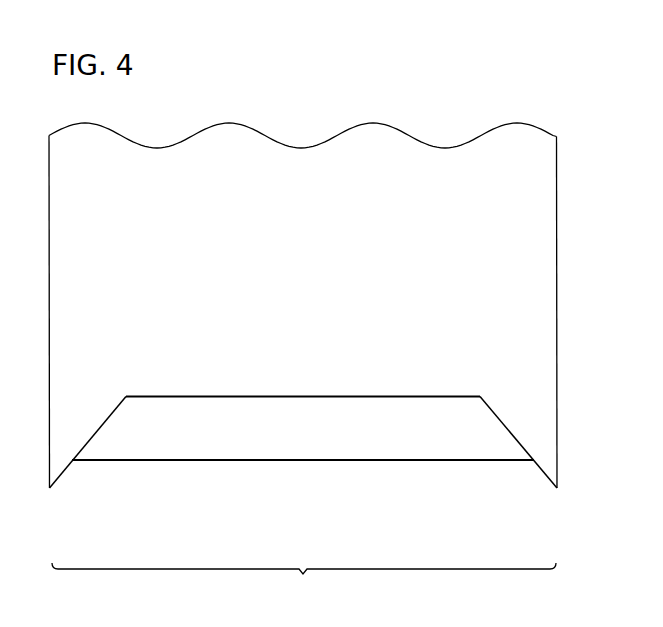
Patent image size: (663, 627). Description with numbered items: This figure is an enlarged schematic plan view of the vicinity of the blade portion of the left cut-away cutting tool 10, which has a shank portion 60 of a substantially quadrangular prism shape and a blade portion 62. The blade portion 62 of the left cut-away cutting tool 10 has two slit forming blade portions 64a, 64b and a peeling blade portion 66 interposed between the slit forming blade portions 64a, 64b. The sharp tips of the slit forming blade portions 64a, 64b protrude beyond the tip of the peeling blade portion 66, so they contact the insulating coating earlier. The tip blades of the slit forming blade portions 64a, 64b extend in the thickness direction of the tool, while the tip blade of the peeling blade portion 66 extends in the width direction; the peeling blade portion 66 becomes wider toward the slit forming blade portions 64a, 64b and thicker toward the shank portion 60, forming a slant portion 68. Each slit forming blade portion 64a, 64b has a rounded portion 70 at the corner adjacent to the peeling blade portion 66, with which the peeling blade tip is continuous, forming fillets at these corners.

The left cut-away cutting tool 10 is at (530, 106).
The shank portion 60 is at (70, 227).
The blade portion 62 is at (304, 580).
The slit forming blade portion 64a is at (60, 481).
The slit forming blade portion 64b is at (550, 481).
The peeling blade portion 66 is at (253, 460).
The slant portion 68 is at (299, 410).
The rounded portion 70 is at (50, 488).